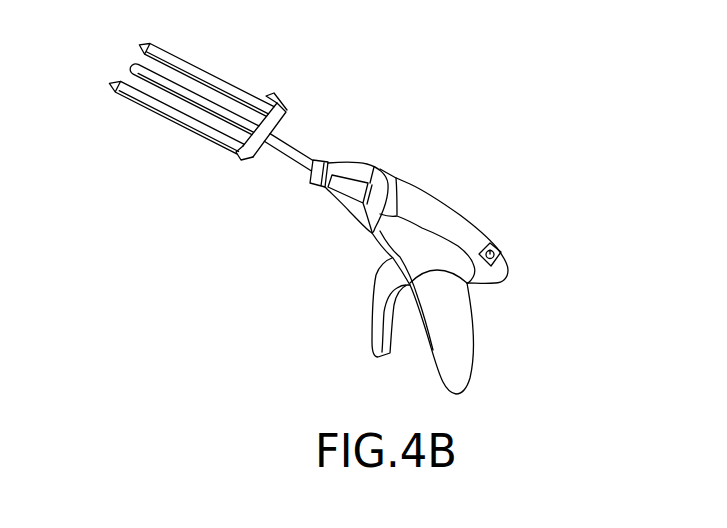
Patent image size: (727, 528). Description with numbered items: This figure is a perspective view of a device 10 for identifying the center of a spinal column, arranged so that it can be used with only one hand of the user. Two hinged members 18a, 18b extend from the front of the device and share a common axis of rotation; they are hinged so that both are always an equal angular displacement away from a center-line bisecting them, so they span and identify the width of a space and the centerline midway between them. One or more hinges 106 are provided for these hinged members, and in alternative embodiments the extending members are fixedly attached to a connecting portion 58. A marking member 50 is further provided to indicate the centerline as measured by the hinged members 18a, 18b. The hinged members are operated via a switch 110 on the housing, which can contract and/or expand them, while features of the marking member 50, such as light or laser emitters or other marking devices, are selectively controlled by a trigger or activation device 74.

The surgical instrument 10 is at (464, 117).
The hinged member 18a is at (214, 75).
The hinged member 18b is at (168, 118).
The marking member 50 is at (134, 68).
The connecting portion 58 is at (287, 118).
The hinge 106 is at (275, 103).
The trigger or activation device 74 is at (372, 336).
The switch 110 is at (500, 248).